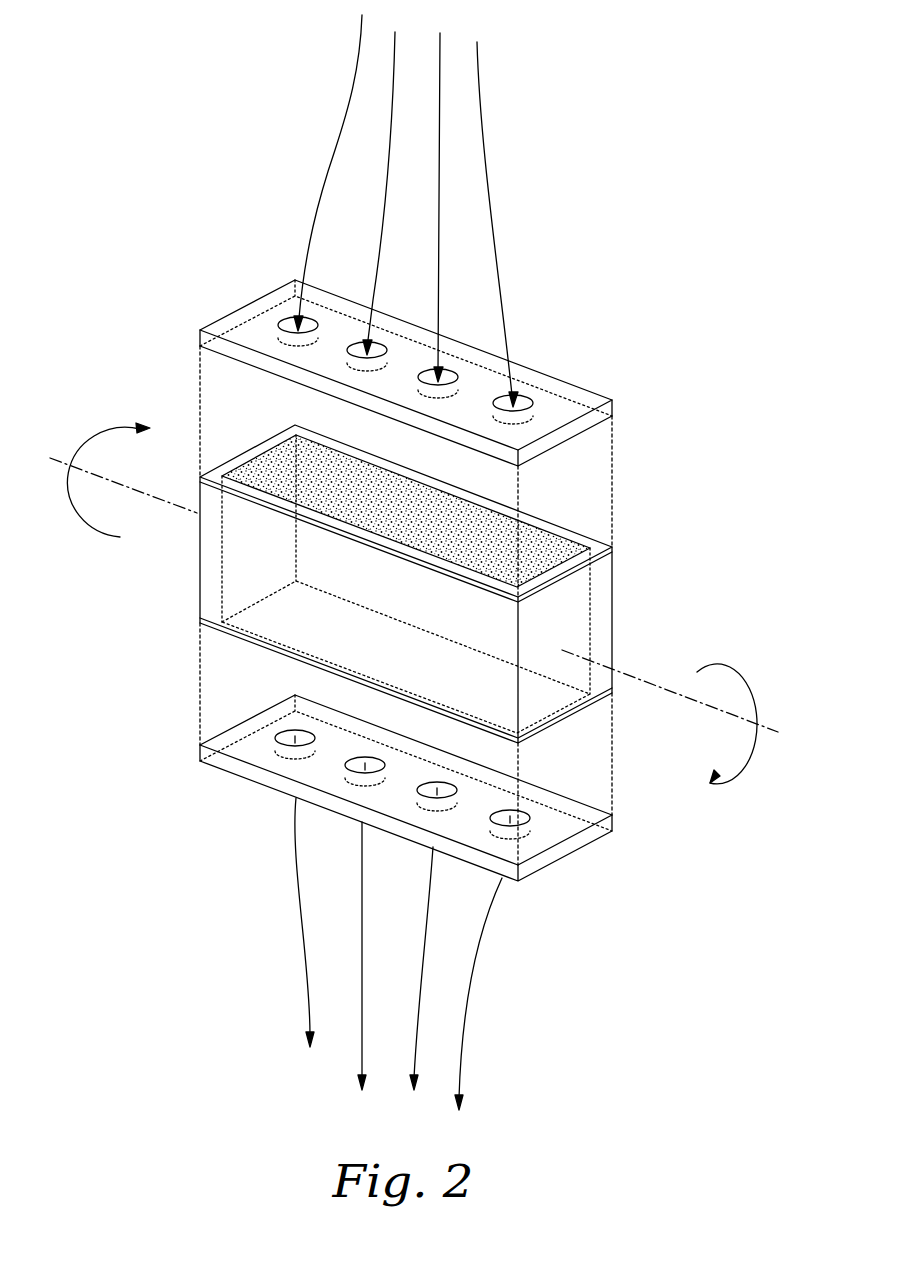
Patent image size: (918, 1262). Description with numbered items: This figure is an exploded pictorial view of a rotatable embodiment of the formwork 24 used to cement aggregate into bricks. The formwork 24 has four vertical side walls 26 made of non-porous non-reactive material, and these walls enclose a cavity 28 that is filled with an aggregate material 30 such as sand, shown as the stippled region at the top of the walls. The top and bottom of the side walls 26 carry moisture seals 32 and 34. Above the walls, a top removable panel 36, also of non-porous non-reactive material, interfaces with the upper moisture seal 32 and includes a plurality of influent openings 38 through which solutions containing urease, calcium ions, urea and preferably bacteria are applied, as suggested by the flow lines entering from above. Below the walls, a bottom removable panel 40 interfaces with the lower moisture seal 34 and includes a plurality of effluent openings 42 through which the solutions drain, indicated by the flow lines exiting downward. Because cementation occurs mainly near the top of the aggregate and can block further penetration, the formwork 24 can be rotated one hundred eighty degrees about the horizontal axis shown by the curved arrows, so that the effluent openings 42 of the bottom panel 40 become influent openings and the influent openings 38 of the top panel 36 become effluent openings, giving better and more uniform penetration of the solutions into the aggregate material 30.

The formwork 24 is at (128, 746).
The vertical side walls 26 is at (553, 618).
The cavity 28 is at (256, 558).
The aggregate material 30 is at (260, 453).
The moisture seal 32 is at (592, 544).
The moisture seal 34 is at (560, 725).
The top removable panel 36 is at (545, 388).
The influent openings 38 is at (355, 347).
The bottom removable panel 40 is at (565, 840).
The effluent openings 42 is at (347, 772).